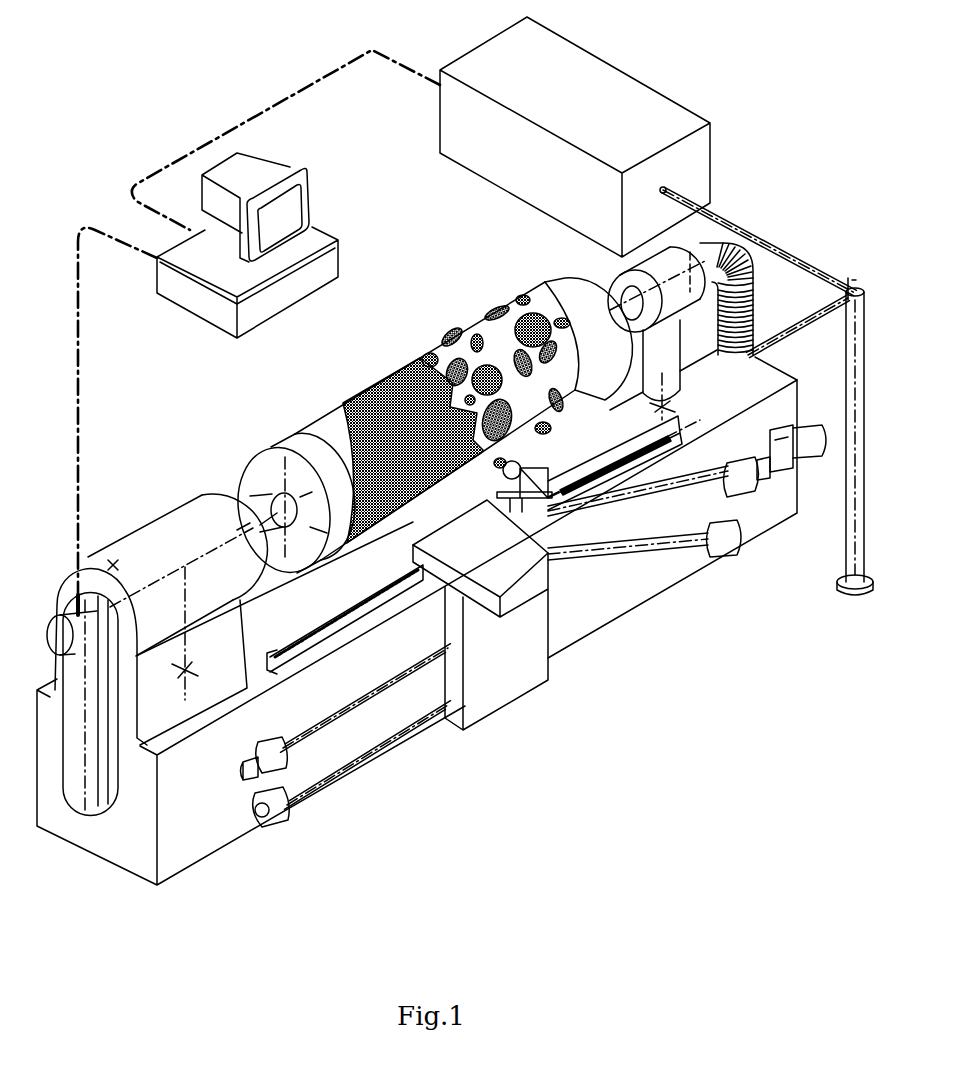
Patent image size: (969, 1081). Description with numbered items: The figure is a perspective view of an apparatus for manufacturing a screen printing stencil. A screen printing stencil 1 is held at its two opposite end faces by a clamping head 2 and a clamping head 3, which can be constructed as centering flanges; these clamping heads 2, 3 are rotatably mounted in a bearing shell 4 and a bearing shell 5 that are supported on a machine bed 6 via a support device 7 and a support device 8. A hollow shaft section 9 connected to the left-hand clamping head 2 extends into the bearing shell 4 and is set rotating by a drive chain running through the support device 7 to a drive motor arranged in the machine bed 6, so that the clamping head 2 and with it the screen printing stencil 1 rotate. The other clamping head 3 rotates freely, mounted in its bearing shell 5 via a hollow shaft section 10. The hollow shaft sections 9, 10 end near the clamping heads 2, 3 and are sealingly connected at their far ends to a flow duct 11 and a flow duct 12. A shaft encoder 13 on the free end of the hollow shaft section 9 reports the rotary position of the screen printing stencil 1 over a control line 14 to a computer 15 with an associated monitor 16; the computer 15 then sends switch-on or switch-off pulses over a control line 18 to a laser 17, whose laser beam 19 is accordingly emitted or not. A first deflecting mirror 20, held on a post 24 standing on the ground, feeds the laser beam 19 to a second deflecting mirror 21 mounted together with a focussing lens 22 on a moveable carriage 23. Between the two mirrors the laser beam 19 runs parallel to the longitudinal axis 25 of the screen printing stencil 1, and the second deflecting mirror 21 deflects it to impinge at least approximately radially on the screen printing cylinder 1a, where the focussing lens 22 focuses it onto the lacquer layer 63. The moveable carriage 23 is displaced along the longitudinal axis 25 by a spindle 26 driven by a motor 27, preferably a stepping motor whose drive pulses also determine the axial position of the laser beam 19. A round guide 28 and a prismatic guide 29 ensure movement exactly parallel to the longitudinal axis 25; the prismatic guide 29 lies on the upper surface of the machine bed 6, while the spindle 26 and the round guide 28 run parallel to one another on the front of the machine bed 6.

The screen printing stencil 1 is at (395, 325).
The screen printing cylinder 1a is at (480, 325).
The clamping head 2 is at (270, 468).
The clamping head 3 is at (563, 292).
The bearing shell 4 is at (153, 570).
The bearing shell 5 is at (690, 258).
The machine bed 6 is at (217, 827).
The support device 7 is at (274, 822).
The support device 8 is at (718, 278).
The hollow shaft section 9 is at (240, 498).
The hollow shaft section 10 is at (620, 300).
The flow duct 11 is at (80, 815).
The flow duct 12 is at (720, 262).
The shaft encoder 13 is at (58, 578).
The control line 14 is at (71, 375).
The computer 15 is at (205, 310).
The monitor 16 is at (309, 206).
The laser 17 is at (530, 46).
The control line 18 is at (300, 98).
The laser beam 19 is at (818, 312).
The first deflecting mirror 20 is at (852, 279).
The second deflecting mirror 21 is at (540, 483).
The focussing lens 22 is at (503, 493).
The moveable carriage 23 is at (490, 570).
The post 24 is at (858, 450).
The longitudinal axis 25 is at (668, 287).
The spindle 26 is at (683, 517).
The motor 27 is at (800, 467).
The round guide 28 is at (420, 732).
The prismatic guide 29 is at (343, 620).
The lacquer layer 63 is at (363, 390).